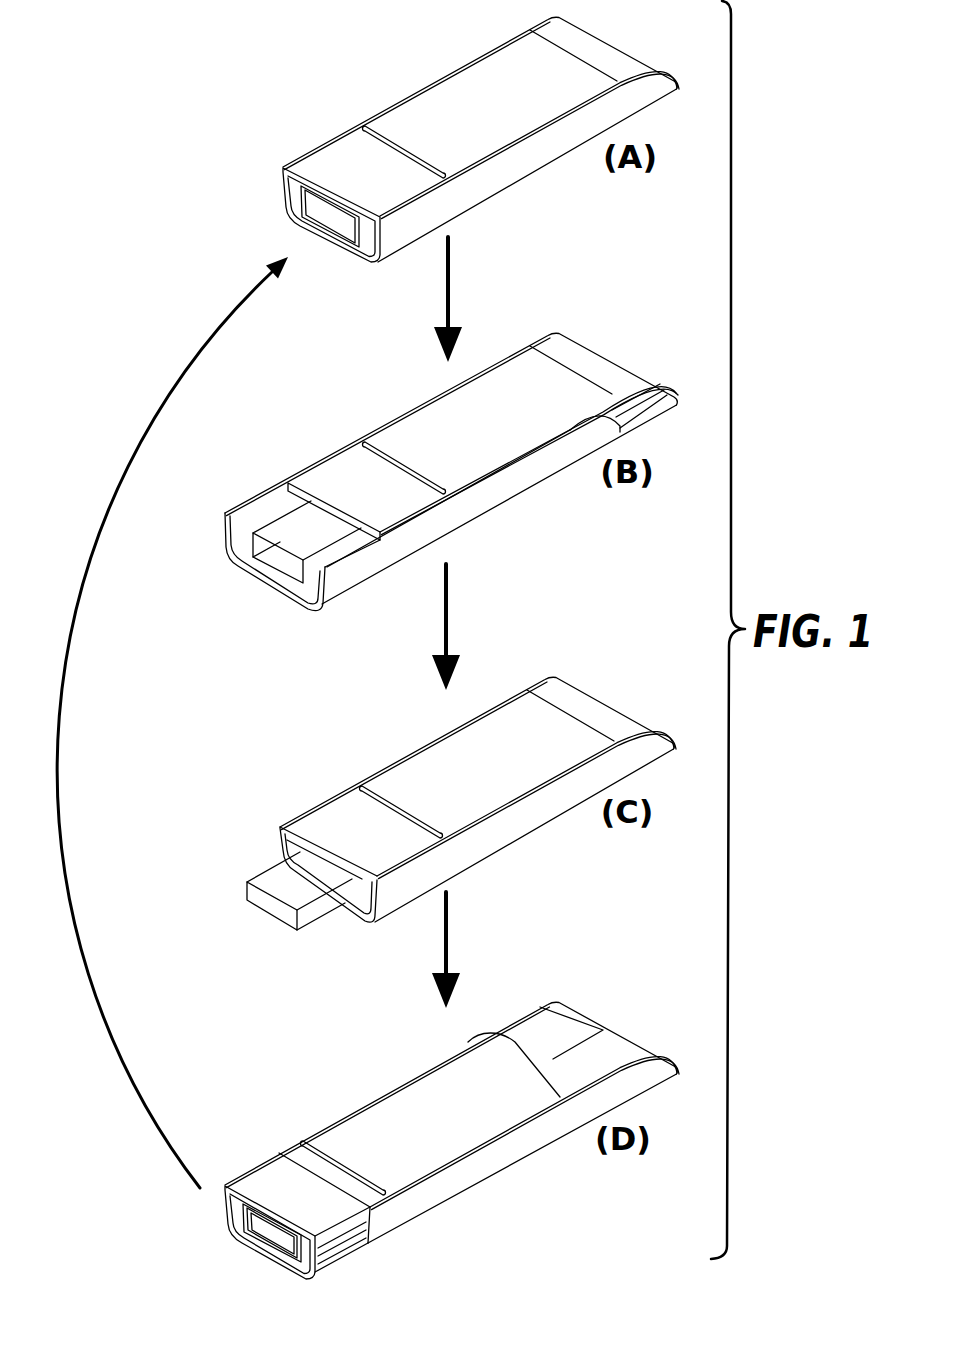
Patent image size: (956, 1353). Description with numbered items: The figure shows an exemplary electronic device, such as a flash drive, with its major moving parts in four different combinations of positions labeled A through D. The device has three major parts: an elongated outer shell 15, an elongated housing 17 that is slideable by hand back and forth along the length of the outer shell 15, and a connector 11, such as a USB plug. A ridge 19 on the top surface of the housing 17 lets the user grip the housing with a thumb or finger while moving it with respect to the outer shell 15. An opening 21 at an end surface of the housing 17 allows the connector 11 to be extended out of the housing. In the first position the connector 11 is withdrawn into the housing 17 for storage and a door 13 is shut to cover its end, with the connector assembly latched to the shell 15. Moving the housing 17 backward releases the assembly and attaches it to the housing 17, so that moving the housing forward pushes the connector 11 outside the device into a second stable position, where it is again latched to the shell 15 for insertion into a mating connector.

The connector 11 is at (288, 543).
The door 13 is at (326, 216).
The outer shell 15 is at (500, 173).
The housing 17 is at (457, 88).
The ridge 19 is at (377, 130).
The opening 21 is at (295, 200).